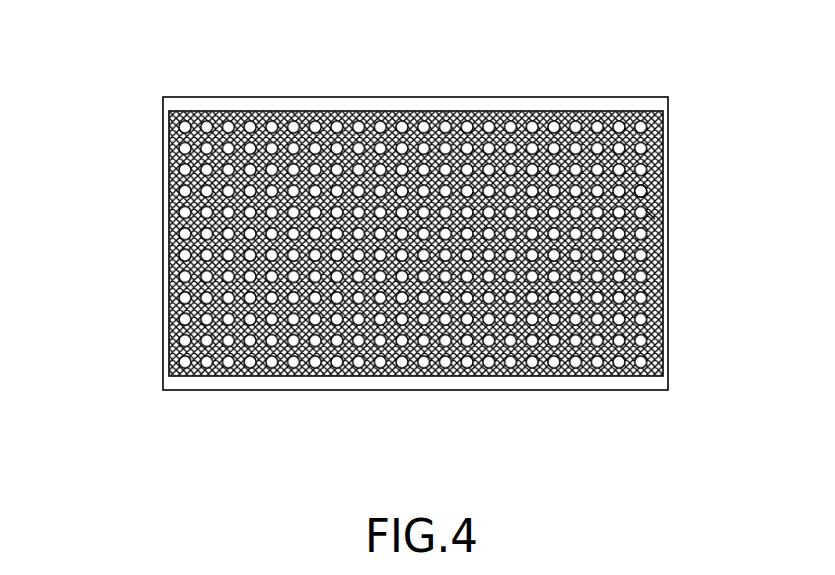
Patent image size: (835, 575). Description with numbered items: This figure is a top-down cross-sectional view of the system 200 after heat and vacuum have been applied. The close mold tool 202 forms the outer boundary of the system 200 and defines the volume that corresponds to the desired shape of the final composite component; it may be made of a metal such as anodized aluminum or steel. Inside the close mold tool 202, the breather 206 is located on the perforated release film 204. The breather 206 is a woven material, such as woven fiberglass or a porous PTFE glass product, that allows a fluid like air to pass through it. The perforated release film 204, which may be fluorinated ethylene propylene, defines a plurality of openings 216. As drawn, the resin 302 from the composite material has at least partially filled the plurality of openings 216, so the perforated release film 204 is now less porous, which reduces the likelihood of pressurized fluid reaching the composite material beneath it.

The system 200 is at (403, 204).
The close mold tool 202 is at (560, 97).
The perforated release film 204 is at (655, 283).
The breather 206 is at (657, 356).
The plurality of openings 216 is at (670, 212).
The resin 302 is at (647, 190).